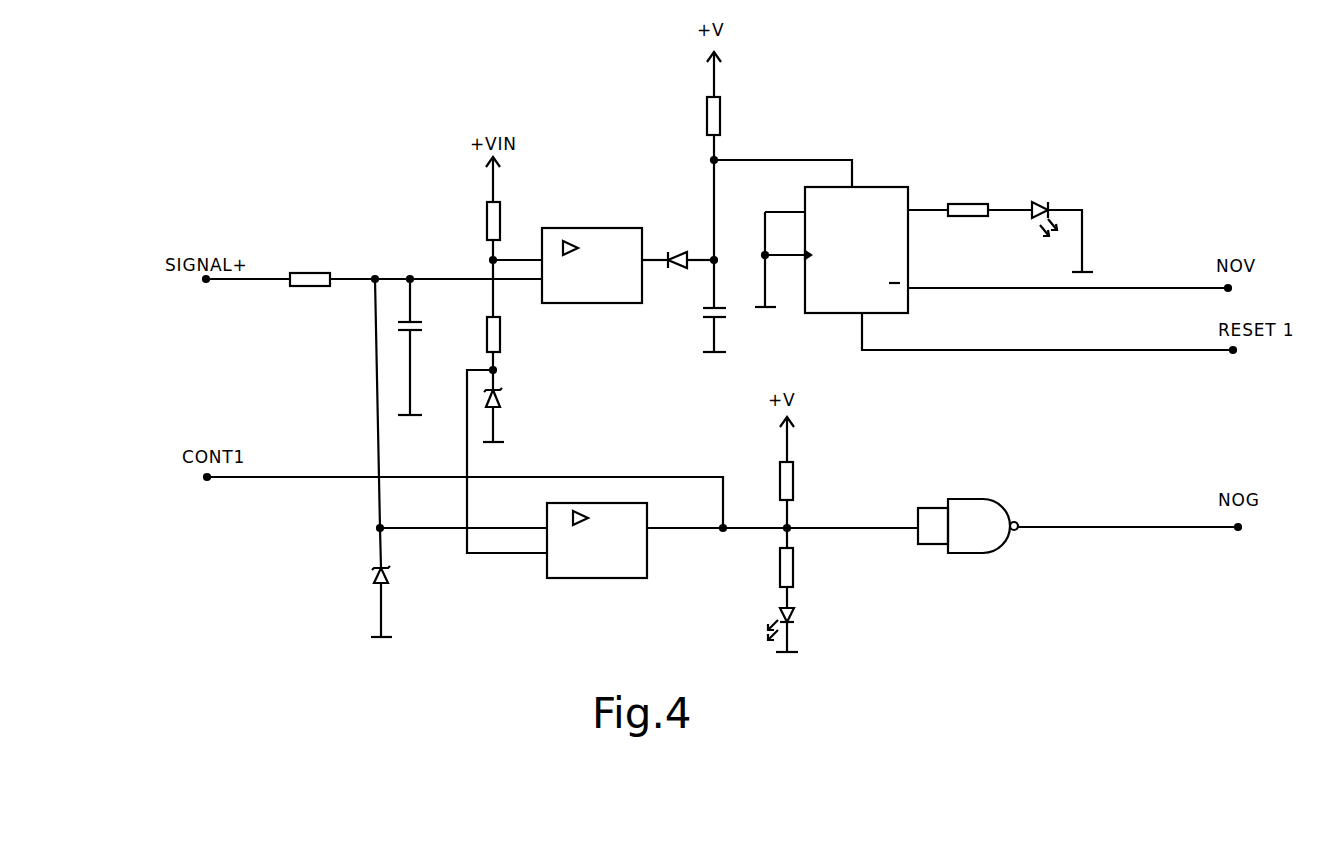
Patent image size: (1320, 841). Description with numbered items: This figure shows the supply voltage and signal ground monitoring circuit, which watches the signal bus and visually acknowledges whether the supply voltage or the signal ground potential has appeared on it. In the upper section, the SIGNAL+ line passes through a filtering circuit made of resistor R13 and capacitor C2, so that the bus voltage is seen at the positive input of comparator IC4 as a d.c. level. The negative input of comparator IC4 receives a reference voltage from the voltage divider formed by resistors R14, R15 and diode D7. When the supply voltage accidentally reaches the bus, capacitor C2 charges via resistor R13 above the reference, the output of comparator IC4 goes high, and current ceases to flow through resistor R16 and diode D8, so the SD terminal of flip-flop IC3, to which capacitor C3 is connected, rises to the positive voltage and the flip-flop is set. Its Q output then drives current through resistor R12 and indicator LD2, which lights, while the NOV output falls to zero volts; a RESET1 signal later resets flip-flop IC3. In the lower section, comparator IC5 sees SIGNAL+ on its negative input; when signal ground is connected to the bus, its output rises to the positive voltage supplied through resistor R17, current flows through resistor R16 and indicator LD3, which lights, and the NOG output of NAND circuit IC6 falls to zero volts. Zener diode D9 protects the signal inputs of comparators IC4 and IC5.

The resistor R13 is at (310, 267).
The capacitor C2 is at (419, 347).
The resistor R14 is at (473, 221).
The resistor R15 is at (514, 334).
The diode D7 is at (507, 415).
The comparator IC4 is at (592, 281).
The diode D8 is at (681, 248).
The resistor R16 is at (770, 342).
The capacitor C3 is at (723, 319).
The flip-flop IC3 is at (856, 267).
The resistor R12 is at (968, 198).
The indicator LD2 is at (1031, 228).
The zener diode D9 is at (397, 601).
The comparator IC5 is at (597, 556).
The resistor R17 is at (807, 481).
The indicator LD3 is at (804, 628).
The NAND circuit IC6 is at (968, 508).